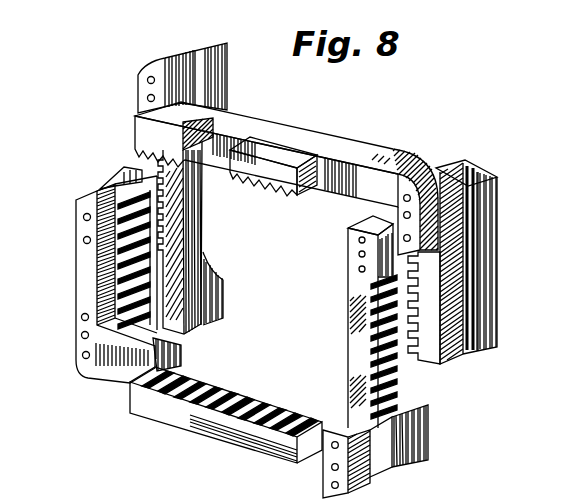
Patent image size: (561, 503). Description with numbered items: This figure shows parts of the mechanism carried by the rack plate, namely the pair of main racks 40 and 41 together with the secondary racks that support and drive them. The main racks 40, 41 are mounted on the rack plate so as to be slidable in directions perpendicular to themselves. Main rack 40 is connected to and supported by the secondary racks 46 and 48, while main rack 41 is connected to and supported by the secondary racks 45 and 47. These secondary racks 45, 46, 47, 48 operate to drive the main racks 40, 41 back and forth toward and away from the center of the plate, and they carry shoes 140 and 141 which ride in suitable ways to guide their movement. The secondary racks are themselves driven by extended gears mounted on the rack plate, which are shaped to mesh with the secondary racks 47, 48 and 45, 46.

The main rack 40 is at (275, 148).
The main rack 41 is at (215, 432).
The secondary rack 45 is at (362, 330).
The secondary rack 46 is at (433, 352).
The secondary rack 47 is at (122, 262).
The secondary rack 48 is at (185, 229).
The shoe 140 is at (398, 268).
The shoe 141 is at (215, 48).